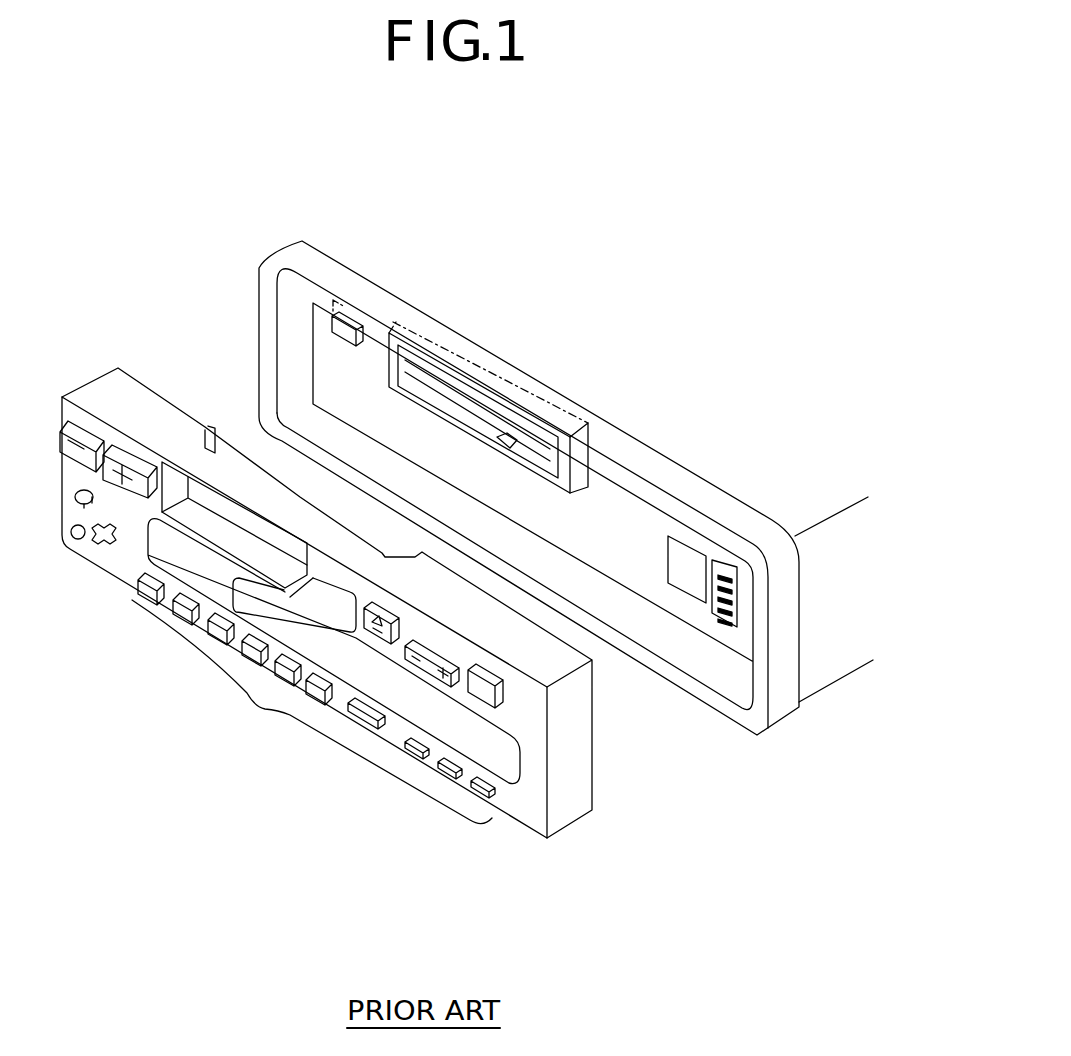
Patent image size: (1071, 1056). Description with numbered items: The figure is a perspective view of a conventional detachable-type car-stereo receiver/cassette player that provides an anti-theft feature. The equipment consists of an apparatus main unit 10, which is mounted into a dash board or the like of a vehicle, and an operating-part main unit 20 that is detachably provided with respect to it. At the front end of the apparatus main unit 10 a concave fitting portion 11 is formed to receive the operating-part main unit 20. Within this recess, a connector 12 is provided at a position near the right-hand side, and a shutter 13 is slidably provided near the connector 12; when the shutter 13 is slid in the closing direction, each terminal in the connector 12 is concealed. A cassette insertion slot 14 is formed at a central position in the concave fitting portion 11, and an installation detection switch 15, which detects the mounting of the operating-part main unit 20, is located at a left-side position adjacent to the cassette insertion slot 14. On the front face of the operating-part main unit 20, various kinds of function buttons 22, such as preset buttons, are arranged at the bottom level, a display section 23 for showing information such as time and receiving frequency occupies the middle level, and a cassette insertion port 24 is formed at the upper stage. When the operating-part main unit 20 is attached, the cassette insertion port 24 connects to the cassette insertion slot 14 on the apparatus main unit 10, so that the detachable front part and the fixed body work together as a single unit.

The apparatus main unit 10 is at (297, 213).
The concave fitting portion 11 is at (607, 495).
The connector 12 is at (722, 617).
The shutter 13 is at (687, 547).
The cassette insertion slot 14 is at (452, 390).
The installation detection switch 15 is at (350, 326).
The operating-part main unit 20 is at (83, 365).
The function buttons 22 is at (312, 712).
The display section 23 is at (500, 752).
The cassette insertion port 24 is at (187, 519).